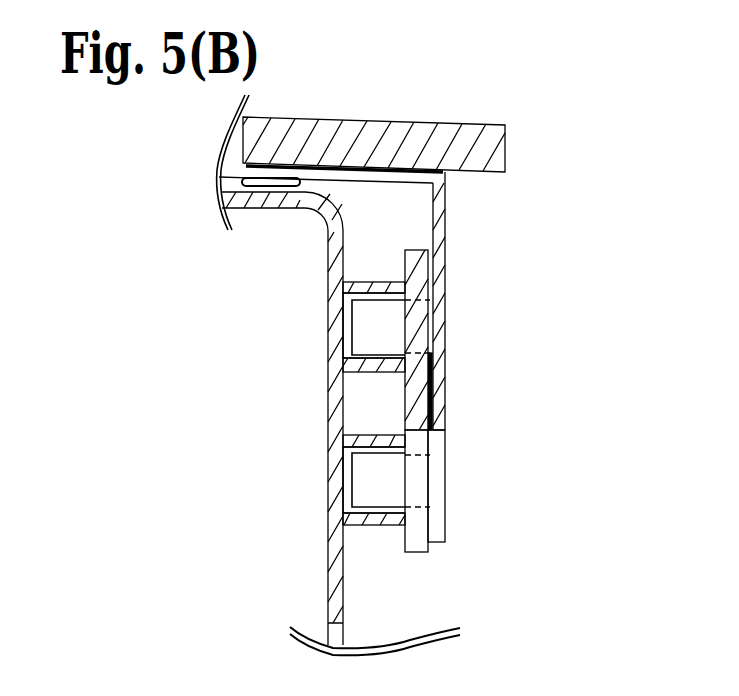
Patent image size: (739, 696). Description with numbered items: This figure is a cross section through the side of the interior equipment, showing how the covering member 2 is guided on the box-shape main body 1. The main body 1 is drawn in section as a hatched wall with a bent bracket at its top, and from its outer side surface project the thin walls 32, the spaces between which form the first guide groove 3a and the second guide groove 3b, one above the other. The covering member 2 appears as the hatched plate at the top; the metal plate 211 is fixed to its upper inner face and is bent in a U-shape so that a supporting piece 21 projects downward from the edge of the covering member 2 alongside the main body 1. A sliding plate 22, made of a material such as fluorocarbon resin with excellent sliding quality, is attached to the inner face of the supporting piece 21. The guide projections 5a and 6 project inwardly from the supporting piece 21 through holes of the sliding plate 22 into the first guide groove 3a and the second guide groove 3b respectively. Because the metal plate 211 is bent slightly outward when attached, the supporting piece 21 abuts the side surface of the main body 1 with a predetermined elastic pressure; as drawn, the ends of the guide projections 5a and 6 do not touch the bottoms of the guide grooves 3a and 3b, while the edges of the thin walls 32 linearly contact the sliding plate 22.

The box-shape main body 1 is at (335, 577).
The covering member 2 is at (490, 150).
The metal plate 211 is at (407, 172).
The supporting piece 21 is at (434, 359).
The sliding plate 22 is at (432, 405).
The thin walls 32 is at (430, 300).
The first guide groove 3a is at (343, 320).
The guide projection 5a is at (372, 335).
The second guide groove 3b is at (343, 467).
The guide projection 6 is at (365, 480).